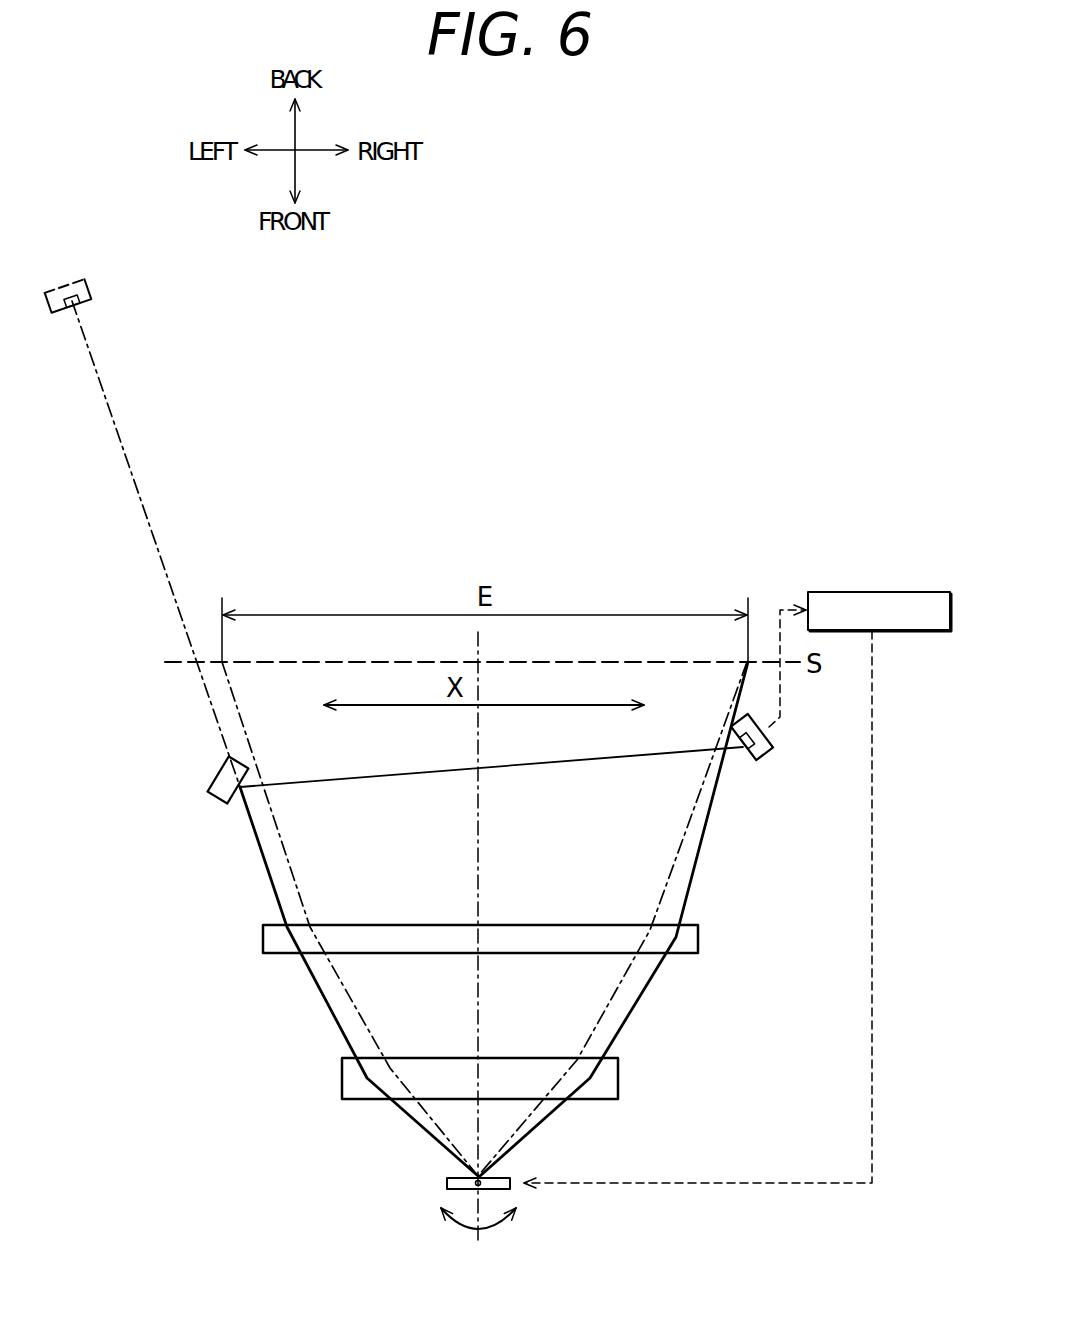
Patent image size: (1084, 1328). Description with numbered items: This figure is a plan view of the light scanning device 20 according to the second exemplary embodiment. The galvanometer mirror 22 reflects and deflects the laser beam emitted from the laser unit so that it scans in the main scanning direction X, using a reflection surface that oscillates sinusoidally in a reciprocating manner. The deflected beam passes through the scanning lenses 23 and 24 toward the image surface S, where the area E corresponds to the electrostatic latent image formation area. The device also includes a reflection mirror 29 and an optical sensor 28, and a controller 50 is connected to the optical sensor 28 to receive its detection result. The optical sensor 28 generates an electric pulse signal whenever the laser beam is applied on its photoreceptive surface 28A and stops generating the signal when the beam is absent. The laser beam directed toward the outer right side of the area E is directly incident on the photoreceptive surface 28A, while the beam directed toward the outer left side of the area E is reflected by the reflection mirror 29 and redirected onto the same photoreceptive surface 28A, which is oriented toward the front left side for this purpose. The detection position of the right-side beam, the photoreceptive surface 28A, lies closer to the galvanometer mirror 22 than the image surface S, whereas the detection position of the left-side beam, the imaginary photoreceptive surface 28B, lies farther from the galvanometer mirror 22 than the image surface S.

The light scanning device 20 is at (254, 1146).
The galvanometer mirror 22 is at (447, 1183).
The scanning lens 23 is at (342, 1078).
The scanning lens 24 is at (263, 937).
The optical sensor 28 is at (780, 752).
The photoreceptive surface 28A is at (746, 753).
The imaginary photoreceptive surface 28B is at (78, 304).
The reflection mirror 29 is at (216, 776).
The controller 50 is at (890, 592).